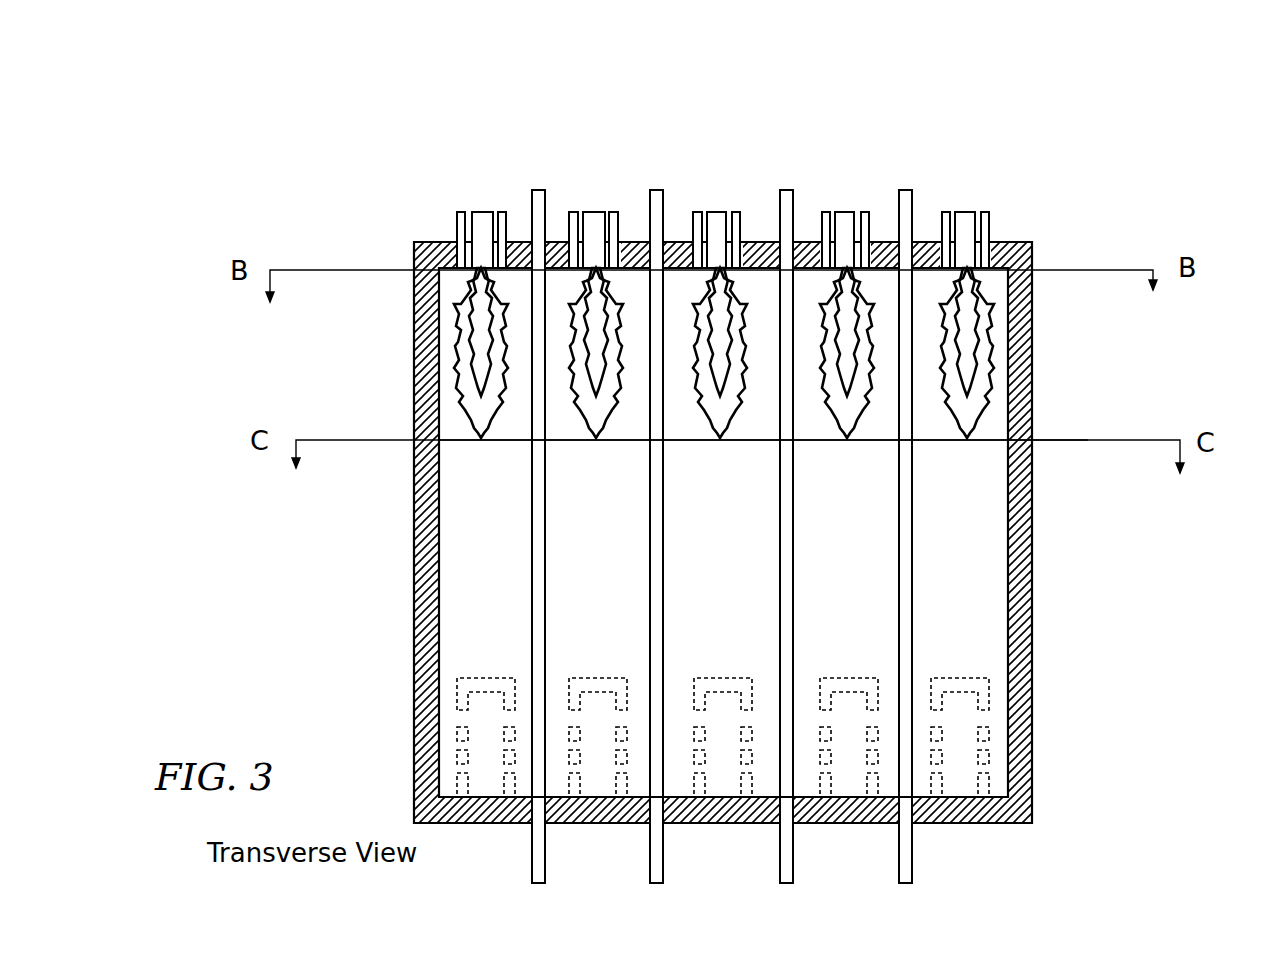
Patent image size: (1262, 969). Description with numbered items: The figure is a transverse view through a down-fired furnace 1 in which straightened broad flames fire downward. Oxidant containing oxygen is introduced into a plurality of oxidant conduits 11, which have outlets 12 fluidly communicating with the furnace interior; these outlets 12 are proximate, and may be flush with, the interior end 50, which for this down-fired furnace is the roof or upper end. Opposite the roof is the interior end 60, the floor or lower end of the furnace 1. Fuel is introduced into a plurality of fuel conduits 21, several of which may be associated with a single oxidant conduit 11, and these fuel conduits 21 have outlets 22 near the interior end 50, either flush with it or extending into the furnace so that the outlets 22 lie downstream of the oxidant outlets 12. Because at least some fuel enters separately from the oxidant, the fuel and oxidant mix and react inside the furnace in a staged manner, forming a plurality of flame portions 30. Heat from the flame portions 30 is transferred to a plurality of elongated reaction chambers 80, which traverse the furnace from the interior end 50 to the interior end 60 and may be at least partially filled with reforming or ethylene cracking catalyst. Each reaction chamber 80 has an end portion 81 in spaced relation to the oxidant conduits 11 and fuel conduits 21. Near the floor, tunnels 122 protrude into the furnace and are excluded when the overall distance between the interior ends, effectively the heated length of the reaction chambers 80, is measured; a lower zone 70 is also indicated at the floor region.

The furnace 1 is at (1095, 225).
The oxidant conduit 11 is at (483, 212).
The oxidant outlet 12 is at (470, 245).
The fuel conduit 21 is at (461, 212).
The fuel conduit outlet 22 is at (456, 242).
The flame portion 30 is at (468, 322).
The interior end 50 is at (498, 318).
The interior end 60 is at (525, 797).
The lower zone 70 is at (1088, 443).
The reaction chamber 80 is at (538, 495).
The end portion 81 is at (526, 272).
The tunnel 122 is at (478, 762).